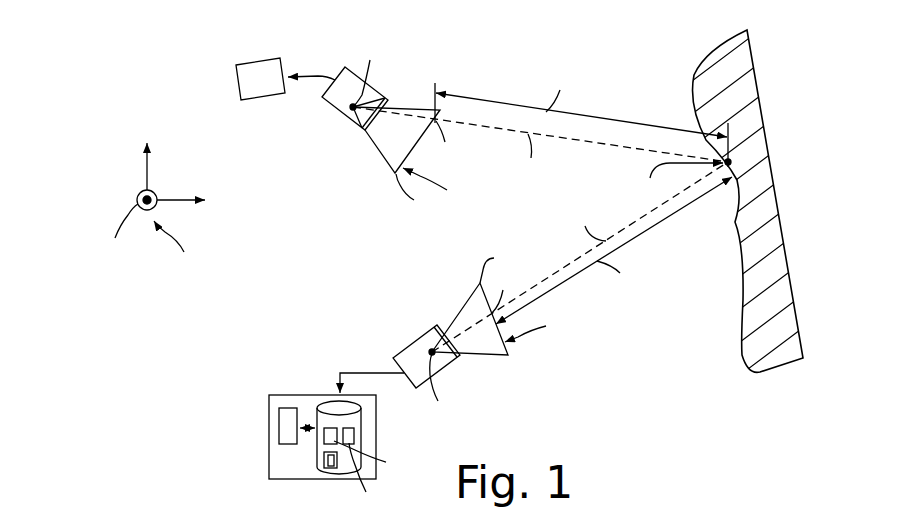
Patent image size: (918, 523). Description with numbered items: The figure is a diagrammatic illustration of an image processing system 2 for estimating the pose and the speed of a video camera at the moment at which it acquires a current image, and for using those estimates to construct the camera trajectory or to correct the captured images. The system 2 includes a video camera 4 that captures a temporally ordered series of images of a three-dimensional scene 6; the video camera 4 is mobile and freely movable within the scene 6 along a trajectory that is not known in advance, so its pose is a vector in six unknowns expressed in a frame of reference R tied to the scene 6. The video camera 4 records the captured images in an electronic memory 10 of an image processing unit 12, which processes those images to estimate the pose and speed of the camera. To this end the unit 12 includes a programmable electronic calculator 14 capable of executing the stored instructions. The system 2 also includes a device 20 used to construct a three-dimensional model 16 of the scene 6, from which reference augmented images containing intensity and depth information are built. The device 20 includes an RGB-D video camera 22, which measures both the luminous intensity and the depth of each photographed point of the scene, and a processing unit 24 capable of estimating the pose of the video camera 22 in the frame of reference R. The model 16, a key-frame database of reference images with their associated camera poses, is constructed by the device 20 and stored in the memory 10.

The image processing system 2 is at (191, 56).
The video camera 4 is at (402, 350).
The three-dimensional scene 6 is at (742, 101).
The electronic memory 10 is at (364, 428).
The image processing unit 12 is at (266, 402).
The programmable electronic calculator 14 is at (280, 428).
The three-dimensional model 16 is at (327, 468).
The device 20 is at (322, 135).
The RGB-D video camera 22 is at (327, 103).
The processing unit 24 is at (241, 100).